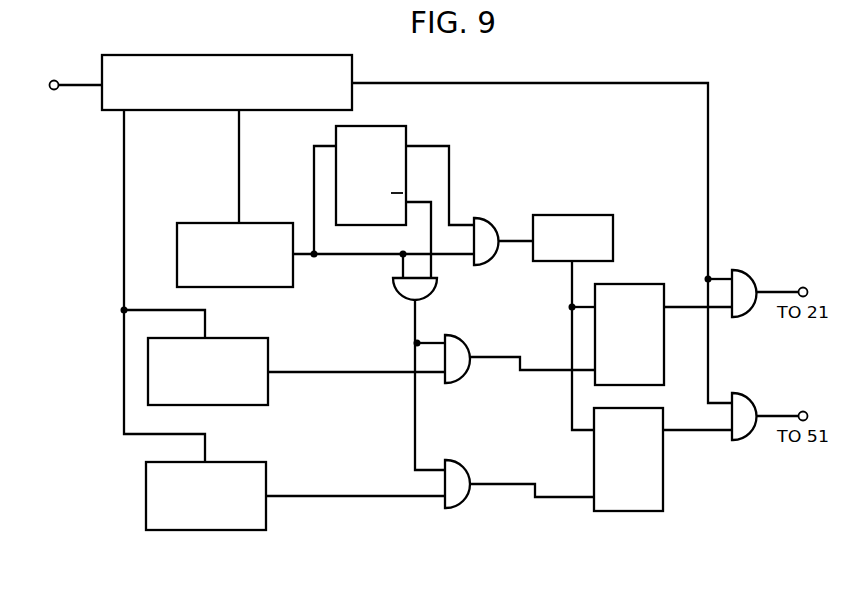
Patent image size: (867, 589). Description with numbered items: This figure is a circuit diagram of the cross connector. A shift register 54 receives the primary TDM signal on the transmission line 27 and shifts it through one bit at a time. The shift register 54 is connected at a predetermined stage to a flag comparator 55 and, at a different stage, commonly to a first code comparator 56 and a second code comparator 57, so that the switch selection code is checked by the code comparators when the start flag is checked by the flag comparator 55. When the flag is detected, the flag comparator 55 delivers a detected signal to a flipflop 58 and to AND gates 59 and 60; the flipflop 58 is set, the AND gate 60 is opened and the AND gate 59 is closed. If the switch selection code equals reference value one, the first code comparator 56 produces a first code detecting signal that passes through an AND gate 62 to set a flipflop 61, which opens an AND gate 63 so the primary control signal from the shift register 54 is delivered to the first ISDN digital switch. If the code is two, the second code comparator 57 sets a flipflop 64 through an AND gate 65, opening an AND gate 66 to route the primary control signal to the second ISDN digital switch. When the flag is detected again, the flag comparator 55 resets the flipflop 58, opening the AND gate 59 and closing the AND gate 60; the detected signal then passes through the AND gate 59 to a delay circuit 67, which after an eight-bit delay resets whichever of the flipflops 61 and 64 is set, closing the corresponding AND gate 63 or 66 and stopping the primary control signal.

The transmission line 27 is at (78, 83).
The shift register 54 is at (149, 55).
The flag comparator 55 is at (262, 223).
The first code comparator 56 is at (246, 338).
The second code comparator 57 is at (243, 462).
The flipflop 58 is at (380, 126).
The AND gate 59 is at (485, 220).
The AND gate 60 is at (438, 283).
The flipflop 61 is at (645, 284).
The AND gate 62 is at (465, 341).
The AND gate 63 is at (749, 274).
The flipflop 64 is at (664, 418).
The AND gate 65 is at (466, 464).
The AND gate 66 is at (752, 402).
The delay circuit 67 is at (581, 215).